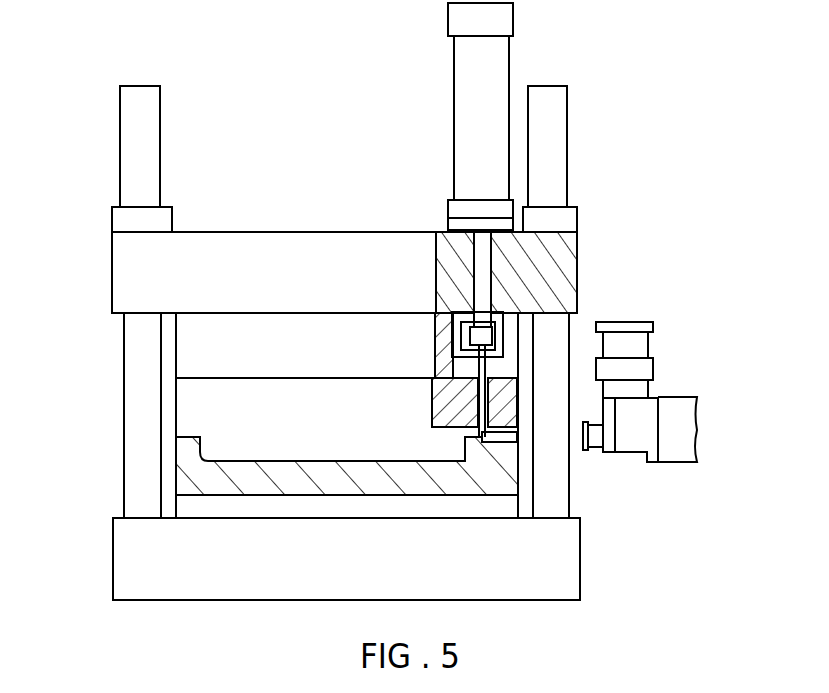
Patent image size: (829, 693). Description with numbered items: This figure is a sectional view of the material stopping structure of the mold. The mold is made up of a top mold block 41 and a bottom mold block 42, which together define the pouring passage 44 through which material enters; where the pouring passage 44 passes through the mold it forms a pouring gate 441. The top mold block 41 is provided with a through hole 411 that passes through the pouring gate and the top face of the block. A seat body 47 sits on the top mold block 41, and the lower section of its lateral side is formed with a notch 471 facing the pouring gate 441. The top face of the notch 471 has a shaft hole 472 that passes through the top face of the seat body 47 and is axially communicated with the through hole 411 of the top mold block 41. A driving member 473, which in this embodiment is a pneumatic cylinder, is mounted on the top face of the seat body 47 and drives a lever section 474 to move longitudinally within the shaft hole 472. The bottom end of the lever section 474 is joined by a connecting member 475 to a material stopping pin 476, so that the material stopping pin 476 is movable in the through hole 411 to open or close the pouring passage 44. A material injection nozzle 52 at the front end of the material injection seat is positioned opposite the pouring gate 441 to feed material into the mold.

The top mold block 41 is at (176, 408).
The bottom mold block 42 is at (176, 486).
The pouring passage 44 is at (497, 428).
The seat body 47 is at (343, 252).
The material injection nozzle 52 is at (648, 410).
The through hole 411 is at (436, 382).
The pouring gate 441 is at (515, 428).
The notch 471 is at (508, 357).
The shaft hole 472 is at (460, 238).
The driving member 473 is at (500, 85).
The lever section 474 is at (478, 278).
The connecting member 475 is at (455, 335).
The material stopping pin 476 is at (467, 428).